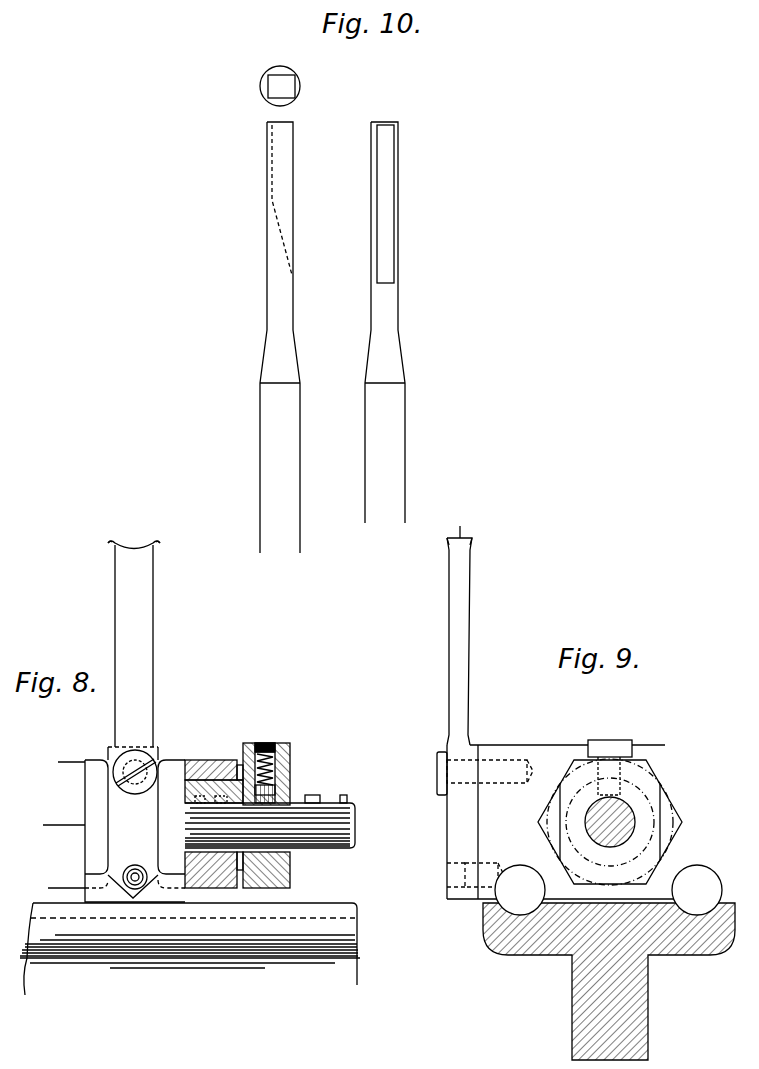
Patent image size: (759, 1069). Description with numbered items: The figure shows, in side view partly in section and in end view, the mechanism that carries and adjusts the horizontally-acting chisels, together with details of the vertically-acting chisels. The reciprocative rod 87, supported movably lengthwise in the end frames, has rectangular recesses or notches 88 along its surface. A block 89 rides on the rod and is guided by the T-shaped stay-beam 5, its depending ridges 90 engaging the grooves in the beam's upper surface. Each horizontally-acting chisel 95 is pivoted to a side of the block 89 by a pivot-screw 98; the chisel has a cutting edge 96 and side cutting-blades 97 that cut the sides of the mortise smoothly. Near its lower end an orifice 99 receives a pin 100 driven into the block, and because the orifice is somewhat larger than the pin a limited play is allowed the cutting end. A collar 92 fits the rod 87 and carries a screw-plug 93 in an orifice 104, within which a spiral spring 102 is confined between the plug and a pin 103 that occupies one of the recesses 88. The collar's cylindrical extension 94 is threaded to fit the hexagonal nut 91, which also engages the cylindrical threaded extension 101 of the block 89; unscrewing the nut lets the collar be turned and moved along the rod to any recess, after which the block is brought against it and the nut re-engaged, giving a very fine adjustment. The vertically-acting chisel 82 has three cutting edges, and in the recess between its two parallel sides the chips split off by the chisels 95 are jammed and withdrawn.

In FIG. 8, the stay-beam 5 is at (190, 949).
In FIG. 9, the stay-beam 5 is at (490, 933).
In FIG. 10, the vertically-acting chisel 82 is at (332, 309).
In FIG. 8, the reciprocative rod 87 is at (270, 825).
In FIG. 9, the reciprocative rod 87 is at (620, 812).
In FIG. 8, the recesses 88 is at (268, 815).
In FIG. 8, the block 89 is at (114, 824).
In FIG. 9, the block 89 is at (675, 823).
In FIG. 9, the depending ridges 90 is at (608, 890).
In FIG. 8, the nut 91 is at (214, 759).
In FIG. 8, the collar 92 is at (243, 760).
In FIG. 9, the collar 92 is at (610, 833).
In FIG. 8, the screw-plug 93 is at (268, 744).
In FIG. 9, the screw-plug 93 is at (612, 740).
In FIG. 8, the cylindrical extension of the collar 94 is at (226, 762).
In FIG. 8, the horizontally-acting chisel 95 is at (134, 644).
In FIG. 9, the horizontally-acting chisel 95 is at (449, 678).
In FIG. 9, the cutting edge 96 is at (461, 522).
In FIG. 8, the side cutting-blades 97 is at (110, 525).
In FIG. 9, the side cutting-blades 97 is at (488, 537).
In FIG. 8, the pivot-screw 98 is at (152, 758).
In FIG. 9, the pivot-screw 98 is at (437, 762).
In FIG. 8, the orifice 99 is at (138, 866).
In FIG. 8, the pin 100 is at (133, 872).
In FIG. 8, the cylindrical threaded extension of block 101 is at (237, 878).
In FIG. 8, the spiral spring 102 is at (290, 767).
In FIG. 8, the pin 103 is at (275, 792).
In FIG. 8, the orifice of collar 104 is at (290, 762).